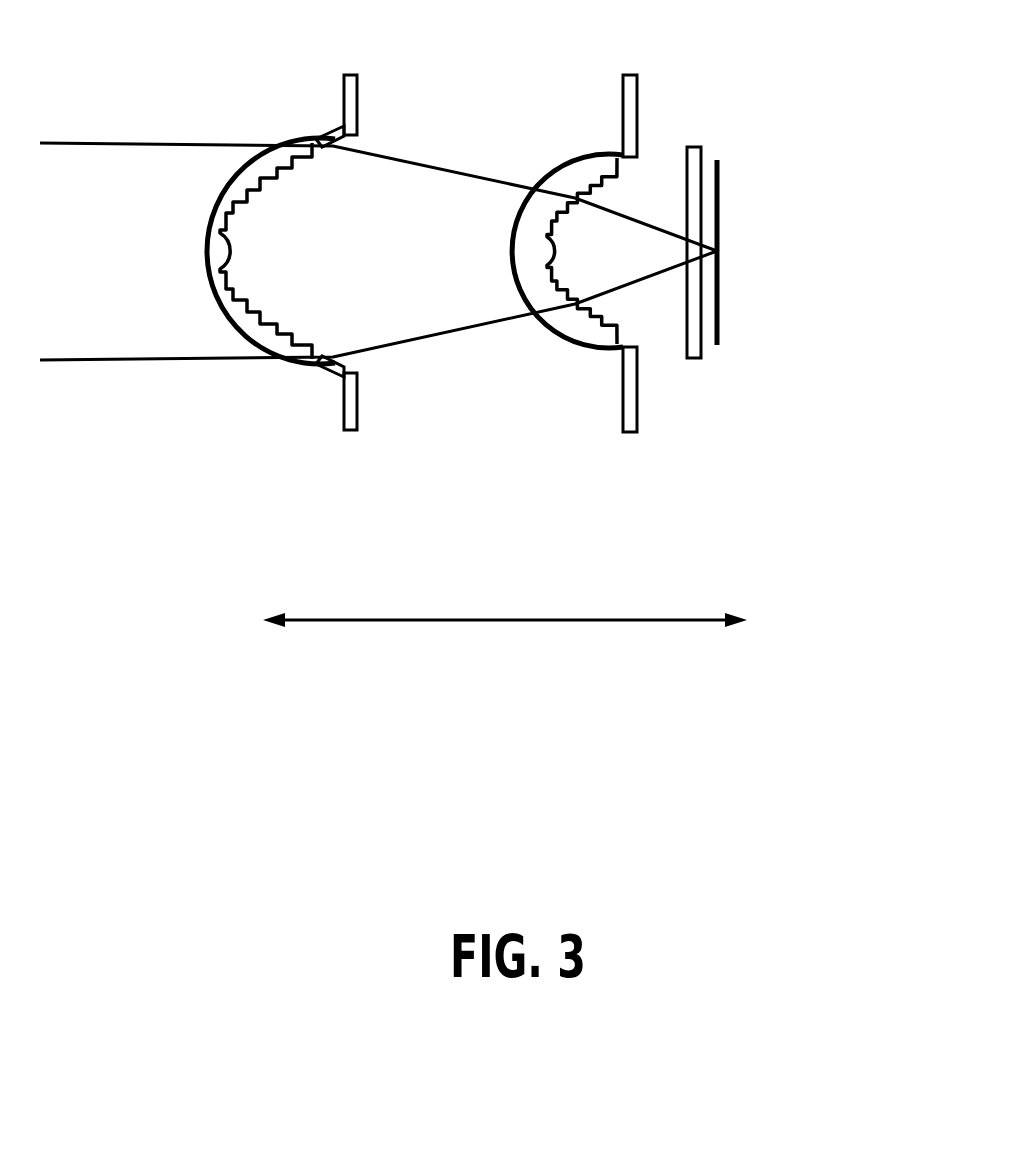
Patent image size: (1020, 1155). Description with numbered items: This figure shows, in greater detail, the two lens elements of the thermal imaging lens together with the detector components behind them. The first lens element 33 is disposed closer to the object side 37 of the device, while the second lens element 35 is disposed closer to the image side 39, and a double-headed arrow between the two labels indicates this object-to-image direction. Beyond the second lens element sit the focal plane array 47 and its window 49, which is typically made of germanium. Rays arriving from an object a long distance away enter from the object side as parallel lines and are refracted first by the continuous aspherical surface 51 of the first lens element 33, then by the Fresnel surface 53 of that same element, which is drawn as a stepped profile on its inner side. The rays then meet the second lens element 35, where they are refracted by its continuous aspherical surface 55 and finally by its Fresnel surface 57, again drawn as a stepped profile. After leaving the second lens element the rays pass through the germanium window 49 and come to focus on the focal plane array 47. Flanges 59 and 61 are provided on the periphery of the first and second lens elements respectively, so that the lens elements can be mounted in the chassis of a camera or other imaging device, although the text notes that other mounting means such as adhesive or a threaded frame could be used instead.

The first lens element 33 is at (220, 255).
The second lens element 35 is at (521, 255).
The object side 37 is at (197, 720).
The image side 39 is at (834, 720).
The focal plane array 47 is at (798, 293).
The window 49 is at (783, 317).
The continuous aspherical surface 51 is at (208, 262).
The Fresnel surface 53 is at (288, 251).
The continuous aspherical surface 55 is at (516, 251).
The Fresnel surface 57 is at (598, 251).
The flange 59 is at (287, 280).
The flange 61 is at (568, 280).